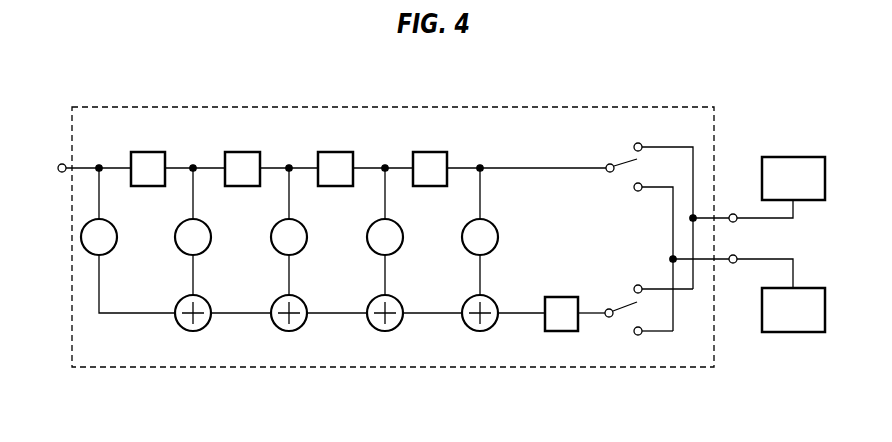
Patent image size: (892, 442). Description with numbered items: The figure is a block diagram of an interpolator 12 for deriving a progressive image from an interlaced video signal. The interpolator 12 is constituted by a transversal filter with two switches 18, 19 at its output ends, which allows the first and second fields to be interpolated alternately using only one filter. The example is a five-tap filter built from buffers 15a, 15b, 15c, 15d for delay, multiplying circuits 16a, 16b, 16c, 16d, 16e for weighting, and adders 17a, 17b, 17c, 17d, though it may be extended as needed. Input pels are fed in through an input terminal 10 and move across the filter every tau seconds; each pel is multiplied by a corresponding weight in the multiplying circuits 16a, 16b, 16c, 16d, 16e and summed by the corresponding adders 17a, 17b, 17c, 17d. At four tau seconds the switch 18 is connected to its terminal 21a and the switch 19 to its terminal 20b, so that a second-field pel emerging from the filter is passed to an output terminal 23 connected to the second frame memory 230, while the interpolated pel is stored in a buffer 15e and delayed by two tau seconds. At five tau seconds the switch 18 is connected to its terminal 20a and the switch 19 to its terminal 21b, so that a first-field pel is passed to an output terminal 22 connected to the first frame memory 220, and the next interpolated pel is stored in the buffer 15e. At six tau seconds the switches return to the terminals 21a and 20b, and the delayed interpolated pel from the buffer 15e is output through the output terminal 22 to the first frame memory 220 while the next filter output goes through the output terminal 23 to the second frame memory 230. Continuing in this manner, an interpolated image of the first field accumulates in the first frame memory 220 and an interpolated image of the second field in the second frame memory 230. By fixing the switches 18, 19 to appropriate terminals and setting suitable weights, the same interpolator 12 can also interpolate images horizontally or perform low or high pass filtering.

The input terminal 10 is at (61, 173).
The interpolator 12 is at (279, 107).
The buffer 15a is at (131, 158).
The buffer 15b is at (225, 158).
The buffer 15c is at (318, 158).
The buffer 15d is at (413, 158).
The buffer 15e is at (545, 300).
The multiplying circuit 16a is at (115, 248).
The multiplying circuit 16b is at (209, 248).
The multiplying circuit 16c is at (305, 248).
The multiplying circuit 16d is at (401, 248).
The multiplying circuit 16e is at (496, 248).
The adder 17a is at (183, 329).
The adder 17b is at (279, 329).
The adder 17c is at (375, 329).
The adder 17d is at (470, 329).
The switch 18 is at (625, 157).
The switch 19 is at (625, 318).
The terminal 20a is at (631, 143).
The terminal 20b is at (631, 284).
The terminal 21a is at (632, 183).
The terminal 21b is at (635, 334).
The output terminal 22 is at (732, 213).
The output terminal 23 is at (732, 265).
The frame memory #1 220 is at (789, 157).
The frame memory #2 230 is at (790, 333).